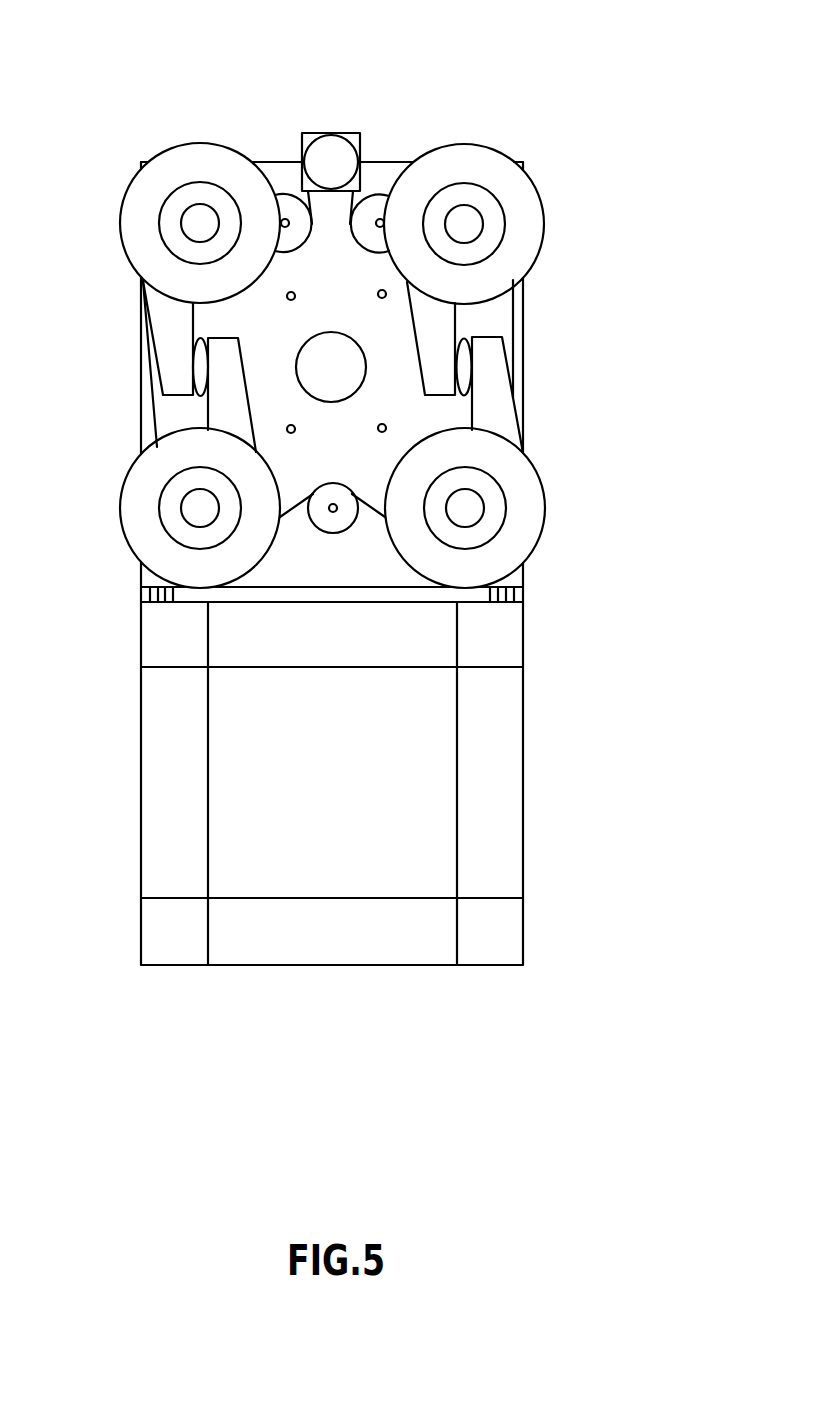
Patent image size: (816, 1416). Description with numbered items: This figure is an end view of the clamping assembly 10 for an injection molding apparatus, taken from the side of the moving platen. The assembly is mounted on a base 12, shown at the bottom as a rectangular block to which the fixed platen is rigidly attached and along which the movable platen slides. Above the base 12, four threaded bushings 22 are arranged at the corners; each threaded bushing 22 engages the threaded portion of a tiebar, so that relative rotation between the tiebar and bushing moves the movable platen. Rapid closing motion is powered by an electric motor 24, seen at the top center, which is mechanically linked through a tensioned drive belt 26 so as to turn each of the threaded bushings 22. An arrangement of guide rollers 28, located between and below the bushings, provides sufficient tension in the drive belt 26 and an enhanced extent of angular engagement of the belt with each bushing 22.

The clamping assembly 10 is at (588, 127).
The base 12 is at (508, 788).
The threaded bushing 22 is at (168, 230).
The electric motor 24 is at (325, 147).
The tensioned drive belt 26 is at (513, 335).
The guide rollers 28 is at (287, 203).